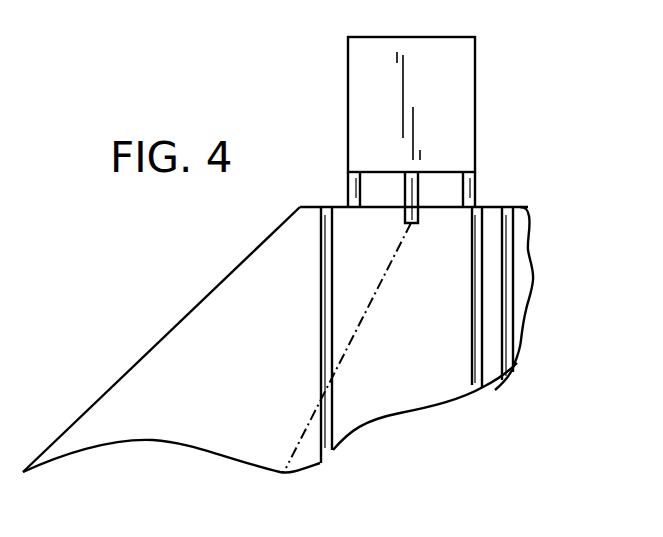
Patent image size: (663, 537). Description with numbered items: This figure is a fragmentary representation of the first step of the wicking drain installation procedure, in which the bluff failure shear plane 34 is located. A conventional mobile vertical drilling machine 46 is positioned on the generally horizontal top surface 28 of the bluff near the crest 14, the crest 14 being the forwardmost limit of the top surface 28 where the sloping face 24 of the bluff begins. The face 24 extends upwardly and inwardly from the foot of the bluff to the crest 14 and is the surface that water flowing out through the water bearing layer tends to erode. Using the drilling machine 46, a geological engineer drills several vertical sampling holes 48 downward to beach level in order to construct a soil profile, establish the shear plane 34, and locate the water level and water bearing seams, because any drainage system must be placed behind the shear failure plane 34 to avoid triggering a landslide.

The crest 14 is at (301, 207).
The face 24 is at (228, 273).
The top surface 28 is at (490, 205).
The bluff failure shear plane 34 is at (373, 305).
The mobile vertical drilling machine 46 is at (457, 100).
The vertical sampling holes 48 is at (320, 335).